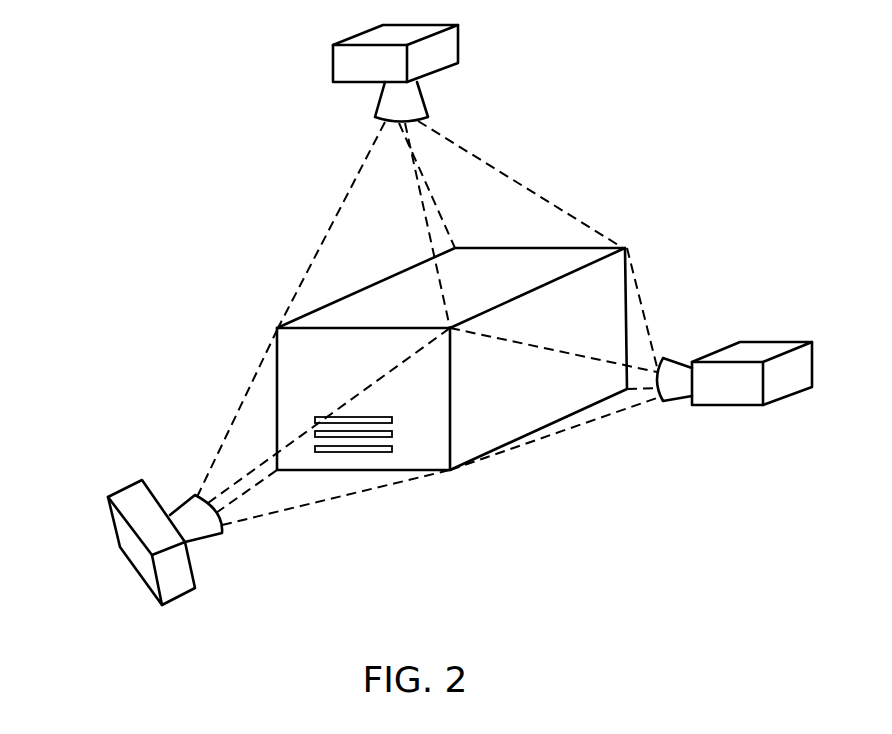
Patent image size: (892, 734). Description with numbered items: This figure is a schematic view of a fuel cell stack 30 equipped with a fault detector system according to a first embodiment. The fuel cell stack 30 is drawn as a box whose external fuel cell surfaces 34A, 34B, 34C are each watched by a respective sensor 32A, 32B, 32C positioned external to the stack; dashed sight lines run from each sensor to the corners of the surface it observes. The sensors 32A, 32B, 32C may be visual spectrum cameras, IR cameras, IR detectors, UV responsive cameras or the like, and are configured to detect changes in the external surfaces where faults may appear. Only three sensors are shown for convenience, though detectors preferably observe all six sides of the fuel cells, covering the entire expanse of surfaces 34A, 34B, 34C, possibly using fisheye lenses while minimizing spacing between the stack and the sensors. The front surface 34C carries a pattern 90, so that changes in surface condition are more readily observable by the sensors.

The fuel cell stack 30 is at (548, 425).
The sensor 32A is at (458, 48).
The sensor 32B is at (775, 340).
The sensor 32C is at (110, 522).
The fuel cell surface 34A is at (502, 258).
The fuel cell surface 34B is at (605, 282).
The fuel cell surface 34C is at (435, 450).
The pattern 90 is at (342, 451).